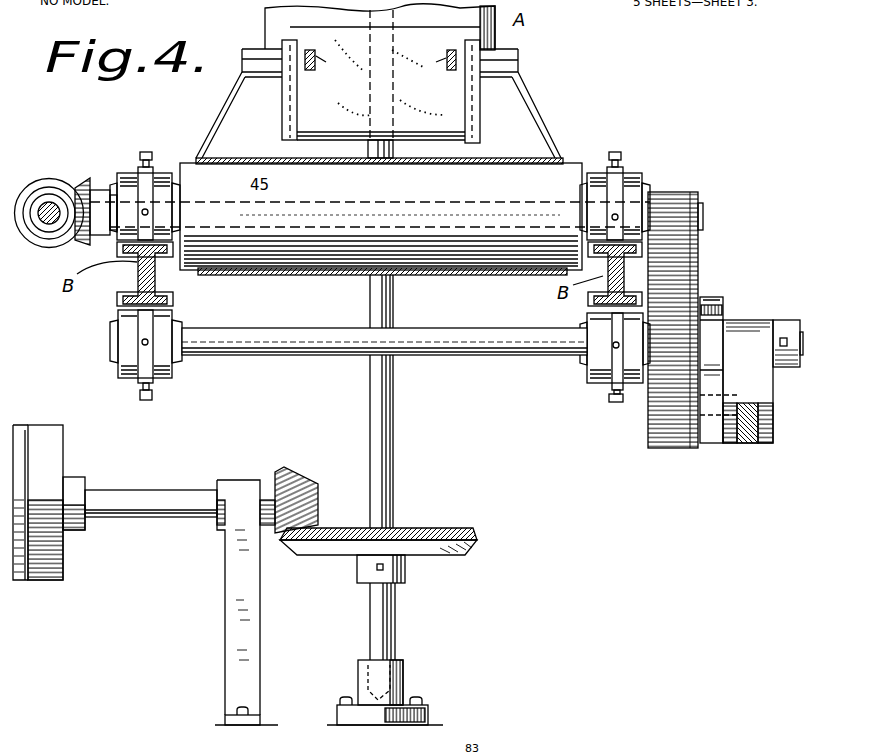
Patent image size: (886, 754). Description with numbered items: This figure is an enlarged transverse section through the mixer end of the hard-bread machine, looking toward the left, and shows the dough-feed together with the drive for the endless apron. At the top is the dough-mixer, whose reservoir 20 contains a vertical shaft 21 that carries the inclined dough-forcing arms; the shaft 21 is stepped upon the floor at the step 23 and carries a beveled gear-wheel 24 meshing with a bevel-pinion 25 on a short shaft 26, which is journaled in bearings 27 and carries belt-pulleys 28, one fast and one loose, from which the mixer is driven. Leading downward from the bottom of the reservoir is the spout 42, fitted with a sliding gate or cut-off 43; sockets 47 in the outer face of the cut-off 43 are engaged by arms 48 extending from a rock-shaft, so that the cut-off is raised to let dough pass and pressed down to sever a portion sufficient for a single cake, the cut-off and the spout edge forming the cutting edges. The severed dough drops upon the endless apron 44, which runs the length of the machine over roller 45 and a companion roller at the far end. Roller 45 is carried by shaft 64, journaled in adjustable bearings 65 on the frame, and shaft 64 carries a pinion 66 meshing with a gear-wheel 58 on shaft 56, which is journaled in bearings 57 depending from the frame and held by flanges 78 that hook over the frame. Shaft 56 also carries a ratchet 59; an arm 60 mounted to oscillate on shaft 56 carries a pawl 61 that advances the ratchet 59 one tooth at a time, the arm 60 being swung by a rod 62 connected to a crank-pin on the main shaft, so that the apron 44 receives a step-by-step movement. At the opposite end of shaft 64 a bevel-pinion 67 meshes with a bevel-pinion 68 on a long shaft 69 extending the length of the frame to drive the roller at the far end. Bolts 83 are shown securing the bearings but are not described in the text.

The reservoir 20 is at (360, 32).
The sliding gate or cut-off 43 is at (390, 78).
The sockets 47 is at (313, 51).
The arms 48 is at (318, 62).
The spout 42 is at (285, 113).
The endless apron 44 is at (512, 151).
The roller 45 is at (370, 216).
The bearings 65 is at (128, 172).
The bolt 83 is at (150, 153).
The bevel-pinion 68 is at (40, 178).
The shaft 69 is at (48, 224).
The bevel-pinion 67 is at (80, 179).
The flanges 78 is at (132, 293).
The bearings 57 is at (162, 332).
The shaft 56 is at (300, 328).
The vertical shaft 21 is at (393, 393).
The beveled gear-wheel 24 is at (470, 528).
The bevel-pinion 25 is at (308, 478).
The bearings 27 is at (240, 513).
The short shaft 26 is at (173, 495).
The belt-pulleys 28 is at (17, 490).
The step 23 is at (403, 680).
The pinion 66 is at (688, 191).
The shaft 64 is at (703, 222).
The gear-wheel 58 is at (692, 293).
The ratchet 59 is at (725, 312).
The arm 60 is at (767, 390).
The pawl 61 is at (717, 402).
The rod 62 is at (750, 443).